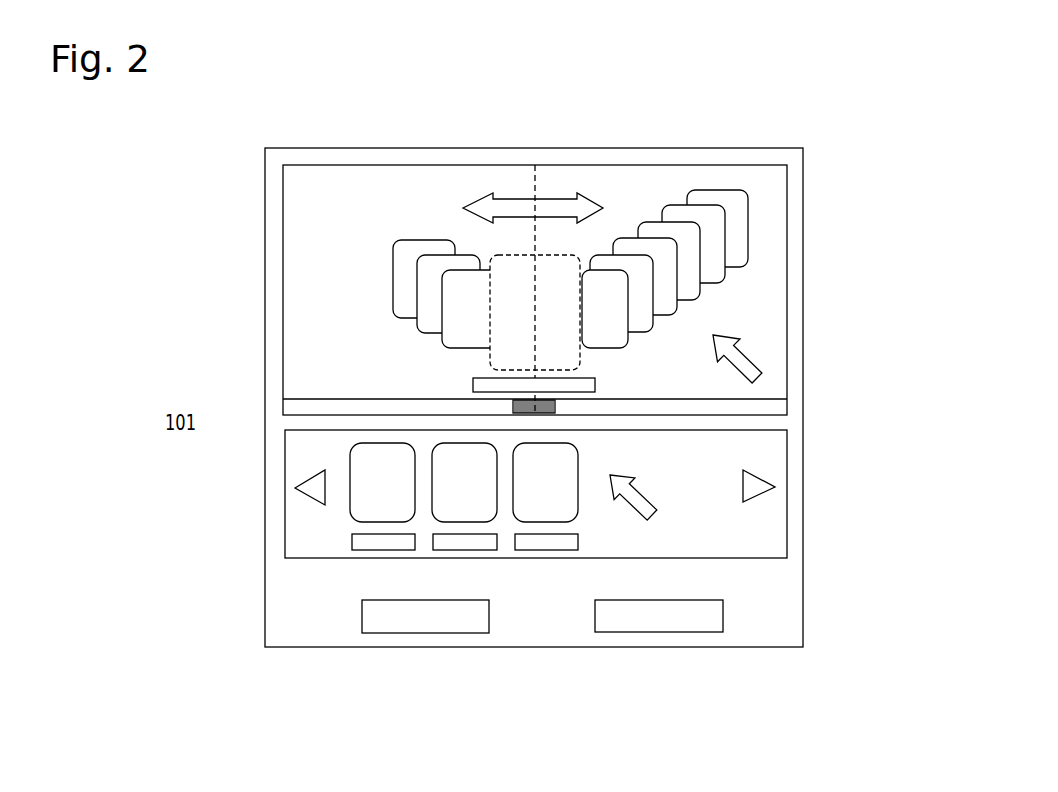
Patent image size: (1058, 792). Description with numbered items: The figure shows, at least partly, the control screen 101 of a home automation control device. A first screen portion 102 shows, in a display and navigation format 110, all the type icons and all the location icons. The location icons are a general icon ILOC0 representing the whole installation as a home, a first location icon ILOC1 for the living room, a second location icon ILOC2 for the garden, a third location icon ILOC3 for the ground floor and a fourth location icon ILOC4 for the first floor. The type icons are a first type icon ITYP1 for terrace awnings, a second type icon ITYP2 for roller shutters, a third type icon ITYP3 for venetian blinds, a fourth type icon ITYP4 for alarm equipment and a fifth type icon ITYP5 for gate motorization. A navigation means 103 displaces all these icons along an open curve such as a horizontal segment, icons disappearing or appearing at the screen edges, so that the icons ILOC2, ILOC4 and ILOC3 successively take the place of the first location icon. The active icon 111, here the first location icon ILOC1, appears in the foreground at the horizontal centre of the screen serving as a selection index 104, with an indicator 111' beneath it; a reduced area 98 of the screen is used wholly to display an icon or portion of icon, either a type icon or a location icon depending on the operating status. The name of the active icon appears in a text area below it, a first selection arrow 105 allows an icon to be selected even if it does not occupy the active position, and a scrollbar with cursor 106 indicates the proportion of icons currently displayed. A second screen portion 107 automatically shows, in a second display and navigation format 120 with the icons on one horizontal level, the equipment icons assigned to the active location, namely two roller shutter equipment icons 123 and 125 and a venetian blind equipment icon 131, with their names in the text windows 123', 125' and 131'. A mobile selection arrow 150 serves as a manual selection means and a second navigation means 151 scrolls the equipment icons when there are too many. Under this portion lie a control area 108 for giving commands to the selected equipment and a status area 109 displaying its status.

The reduced area 98 is at (557, 255).
The control screen 101 is at (265, 432).
The first screen portion 102 is at (303, 170).
The navigation means 103 is at (502, 203).
The selection index 104 is at (535, 165).
The first selection arrow 105 is at (763, 370).
The scrollbar with cursor 106 is at (555, 405).
The second screen portion 107 is at (772, 547).
The control area 108 is at (395, 620).
The status area 109 is at (693, 620).
The display and navigation format 110 is at (690, 183).
The active icon 111 is at (378, 267).
The card indicator bar 111' is at (380, 386).
The second display and navigation format 120 is at (304, 458).
The roller shutter equipment icon 123 is at (290, 488).
The text window 123' is at (290, 550).
The roller shutter equipment icon 125 is at (475, 570).
The text window 125' is at (465, 616).
The venetian blind equipment icon 131 is at (577, 570).
The text window 131' is at (549, 616).
The mobile selection arrow 150 is at (637, 482).
The second navigation means 151 is at (755, 490).
The general icon ILOC0 is at (602, 340).
The first location icon ILOC1 is at (517, 357).
The second location icon ILOC2 is at (460, 333).
The third location icon ILOC3 is at (403, 256).
The fourth location icon ILOC4 is at (427, 297).
The first type icon ITYP1 is at (640, 323).
The second type icon ITYP2 is at (733, 203).
The third type icon ITYP3 is at (688, 265).
The fourth type icon ITYP4 is at (712, 232).
The fifth type icon ITYP5 is at (665, 295).